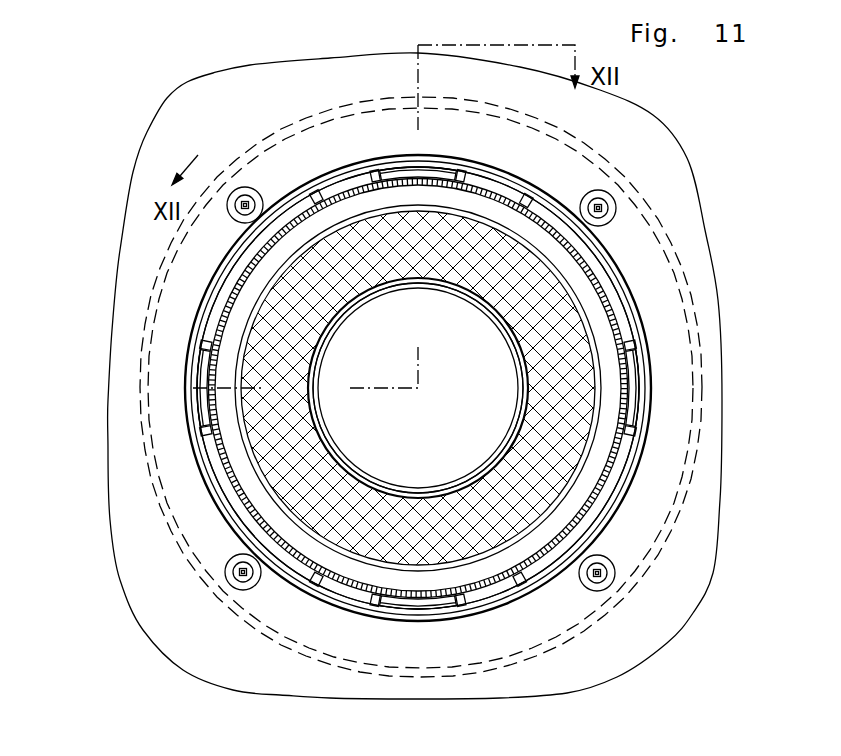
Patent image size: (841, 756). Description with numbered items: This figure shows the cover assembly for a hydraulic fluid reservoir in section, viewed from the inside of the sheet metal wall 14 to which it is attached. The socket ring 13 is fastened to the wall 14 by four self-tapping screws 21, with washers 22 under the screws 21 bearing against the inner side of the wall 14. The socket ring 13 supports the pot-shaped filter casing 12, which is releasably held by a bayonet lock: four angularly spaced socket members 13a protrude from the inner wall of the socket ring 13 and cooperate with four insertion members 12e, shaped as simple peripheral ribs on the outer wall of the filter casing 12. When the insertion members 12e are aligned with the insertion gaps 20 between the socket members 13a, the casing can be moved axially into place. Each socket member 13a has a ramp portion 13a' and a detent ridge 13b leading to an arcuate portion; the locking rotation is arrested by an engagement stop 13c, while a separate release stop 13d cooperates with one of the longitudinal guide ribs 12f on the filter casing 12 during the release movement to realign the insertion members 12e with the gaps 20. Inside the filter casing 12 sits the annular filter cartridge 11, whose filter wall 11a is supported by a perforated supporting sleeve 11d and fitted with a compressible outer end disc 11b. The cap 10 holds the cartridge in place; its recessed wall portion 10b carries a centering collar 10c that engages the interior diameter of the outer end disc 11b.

The cap 10 is at (483, 519).
The recessed wall portion 10b is at (475, 453).
The centering collar 10c is at (340, 453).
The filter cartridge 11 is at (596, 337).
The filter wall 11a is at (540, 337).
The outer end disc 11b is at (277, 497).
The perforated supporting sleeve 11d is at (327, 343).
The filter casing 12 is at (618, 473).
The insertion members 12e is at (433, 177).
The longitudinal guide ribs 12f is at (150, 467).
The socket ring 13 is at (675, 267).
The socket members 13a is at (418, 338).
The ramp portion 13a' is at (574, 352).
The detent ridge 13b is at (483, 157).
The engagement stop 13c is at (377, 168).
The release stop 13d is at (313, 192).
The sheet metal wall 14 is at (650, 617).
The insertion gaps 20 is at (293, 212).
The self-tapping screws 21 is at (242, 580).
The washers 22 is at (228, 570).